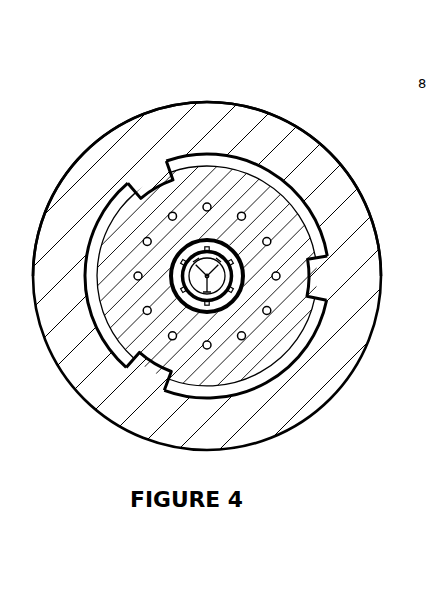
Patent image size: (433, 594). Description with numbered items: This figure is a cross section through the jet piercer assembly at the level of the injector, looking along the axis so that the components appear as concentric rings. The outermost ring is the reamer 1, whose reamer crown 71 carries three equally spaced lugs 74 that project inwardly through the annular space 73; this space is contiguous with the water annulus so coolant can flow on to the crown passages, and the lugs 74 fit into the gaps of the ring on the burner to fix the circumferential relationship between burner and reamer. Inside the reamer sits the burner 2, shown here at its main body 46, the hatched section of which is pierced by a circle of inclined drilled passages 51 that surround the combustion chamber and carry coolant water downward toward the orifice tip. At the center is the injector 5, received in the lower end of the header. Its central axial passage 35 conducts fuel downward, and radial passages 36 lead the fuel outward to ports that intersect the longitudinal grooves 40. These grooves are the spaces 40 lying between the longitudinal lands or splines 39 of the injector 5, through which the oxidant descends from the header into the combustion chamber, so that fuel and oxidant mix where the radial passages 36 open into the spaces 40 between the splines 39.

The reamer 1 is at (238, 87).
The burner 2 is at (110, 192).
The injector 5 is at (227, 244).
The central axial passage 35 is at (183, 244).
The radial passages 36 is at (224, 303).
The longitudinal lands or splines 39 is at (183, 307).
The spaces or longitudinal grooves 40 is at (176, 302).
The main body 46 is at (338, 198).
The inclined drilled passages 51 is at (259, 312).
The reamer crown 71 is at (283, 144).
The annular space 73 is at (112, 342).
The lugs 74 is at (148, 180).